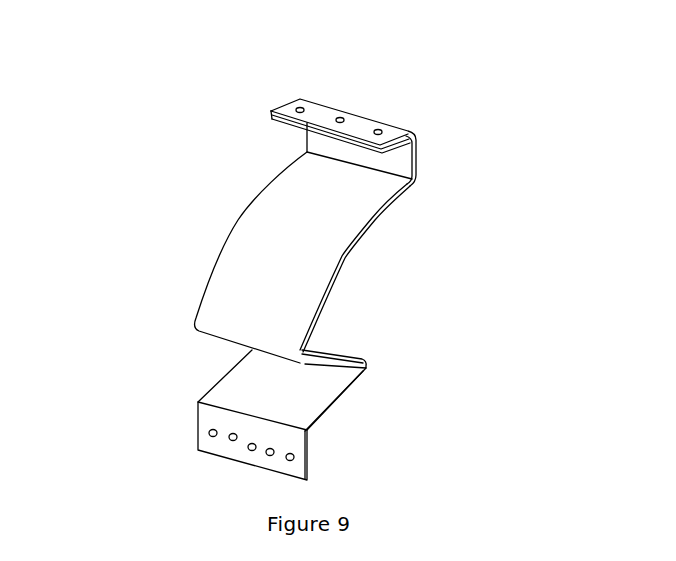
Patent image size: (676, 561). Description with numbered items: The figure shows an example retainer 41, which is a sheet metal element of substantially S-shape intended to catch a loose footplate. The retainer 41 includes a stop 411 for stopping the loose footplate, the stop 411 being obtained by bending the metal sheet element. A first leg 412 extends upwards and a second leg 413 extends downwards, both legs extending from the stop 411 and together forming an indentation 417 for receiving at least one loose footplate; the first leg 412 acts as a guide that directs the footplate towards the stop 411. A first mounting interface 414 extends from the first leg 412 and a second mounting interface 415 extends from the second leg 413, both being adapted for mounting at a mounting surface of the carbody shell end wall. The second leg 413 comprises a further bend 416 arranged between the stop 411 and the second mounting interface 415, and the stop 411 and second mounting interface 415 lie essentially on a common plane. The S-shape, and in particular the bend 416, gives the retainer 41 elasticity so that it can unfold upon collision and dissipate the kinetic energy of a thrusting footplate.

The retainer 41 is at (198, 123).
The stop 411 is at (423, 341).
The first leg 412 is at (196, 245).
The second leg 413 is at (375, 390).
The first mounting interface 414 is at (355, 125).
The second mounting interface 415 is at (176, 428).
The further bend 416 is at (234, 417).
The indentation 417 is at (382, 306).